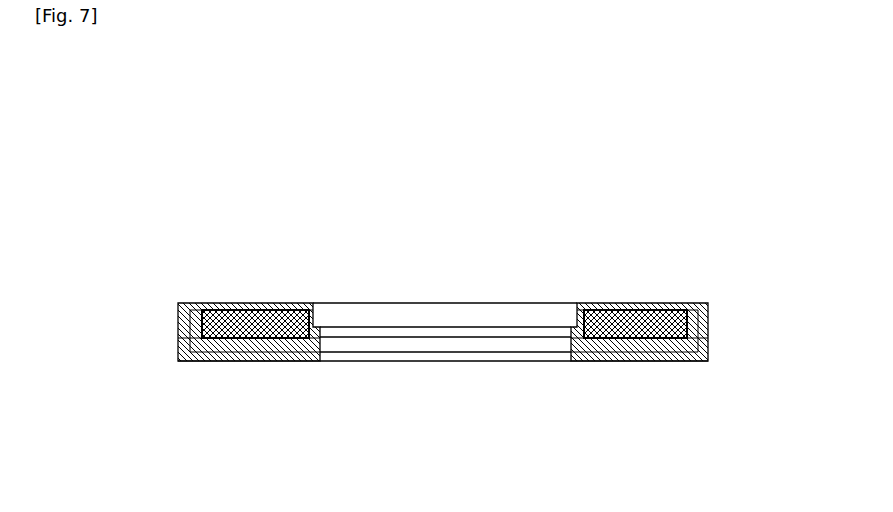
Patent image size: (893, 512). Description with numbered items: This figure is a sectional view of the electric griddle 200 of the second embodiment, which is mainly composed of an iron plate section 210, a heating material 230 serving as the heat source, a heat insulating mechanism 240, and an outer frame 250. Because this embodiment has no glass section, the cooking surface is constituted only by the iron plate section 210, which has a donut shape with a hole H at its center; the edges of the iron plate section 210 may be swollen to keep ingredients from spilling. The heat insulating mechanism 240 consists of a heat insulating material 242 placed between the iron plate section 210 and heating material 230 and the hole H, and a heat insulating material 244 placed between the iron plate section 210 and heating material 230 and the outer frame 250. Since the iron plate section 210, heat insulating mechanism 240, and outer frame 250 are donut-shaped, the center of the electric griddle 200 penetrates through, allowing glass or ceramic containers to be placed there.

The electric griddle 200 is at (454, 95).
The hole H is at (463, 297).
The iron plate section 210 is at (237, 303).
The heating material 230 is at (178, 329).
The heat insulating mechanism 240 is at (150, 455).
The heat insulating material 242 is at (270, 362).
The heat insulating material 244 is at (219, 362).
The outer frame 250 is at (307, 362).